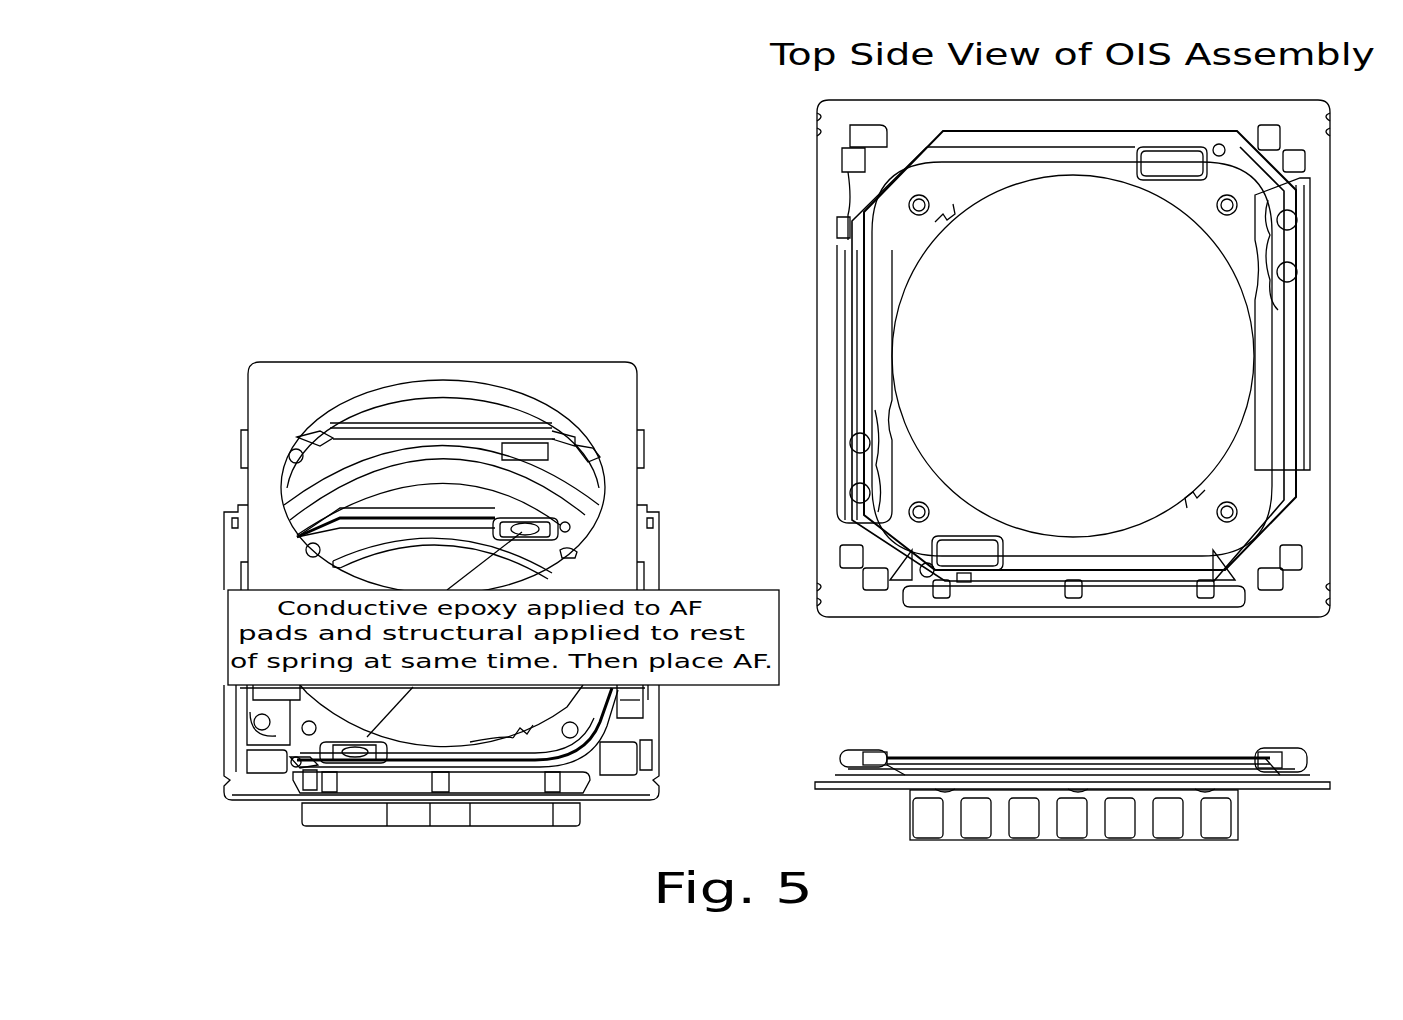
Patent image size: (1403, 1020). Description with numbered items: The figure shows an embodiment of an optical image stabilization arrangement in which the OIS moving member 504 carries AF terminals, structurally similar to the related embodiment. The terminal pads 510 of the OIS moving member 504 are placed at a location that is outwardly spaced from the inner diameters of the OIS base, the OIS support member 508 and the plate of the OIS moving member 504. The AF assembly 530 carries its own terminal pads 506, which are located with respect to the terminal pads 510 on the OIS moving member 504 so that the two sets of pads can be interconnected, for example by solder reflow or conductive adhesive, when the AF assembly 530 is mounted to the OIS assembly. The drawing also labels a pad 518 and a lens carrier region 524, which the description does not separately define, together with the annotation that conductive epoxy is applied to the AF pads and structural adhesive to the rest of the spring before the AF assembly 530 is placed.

The OIS moving member 504 is at (1308, 752).
The AF assembly terminal pads 506 is at (523, 447).
The OIS support member 508 is at (1313, 808).
The OIS moving member terminal pads 510 is at (301, 762).
The AF pad 518 is at (383, 763).
The lens carrier 524 is at (498, 743).
The AF assembly 530 is at (578, 472).